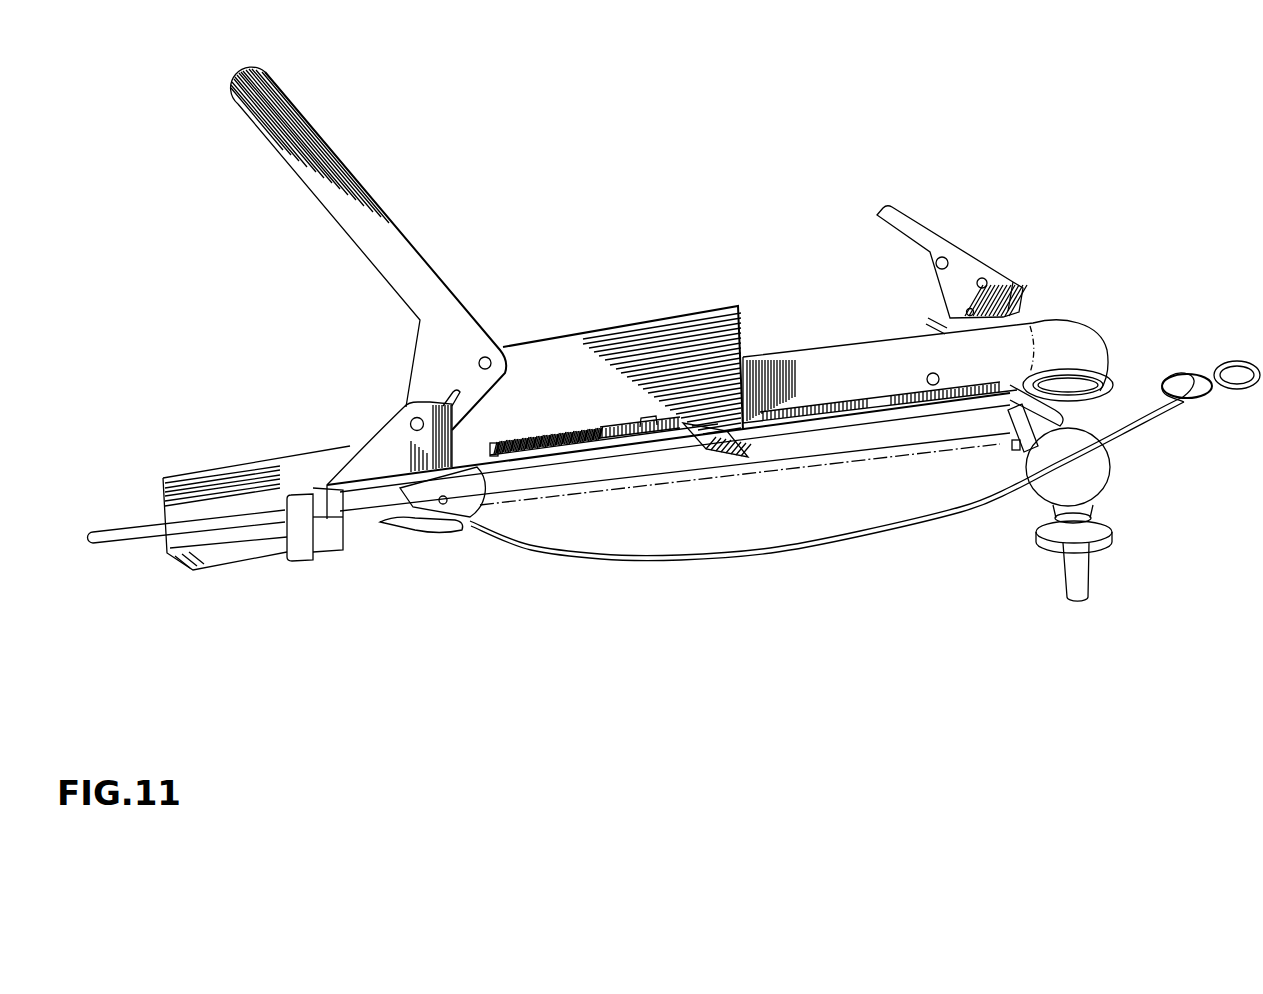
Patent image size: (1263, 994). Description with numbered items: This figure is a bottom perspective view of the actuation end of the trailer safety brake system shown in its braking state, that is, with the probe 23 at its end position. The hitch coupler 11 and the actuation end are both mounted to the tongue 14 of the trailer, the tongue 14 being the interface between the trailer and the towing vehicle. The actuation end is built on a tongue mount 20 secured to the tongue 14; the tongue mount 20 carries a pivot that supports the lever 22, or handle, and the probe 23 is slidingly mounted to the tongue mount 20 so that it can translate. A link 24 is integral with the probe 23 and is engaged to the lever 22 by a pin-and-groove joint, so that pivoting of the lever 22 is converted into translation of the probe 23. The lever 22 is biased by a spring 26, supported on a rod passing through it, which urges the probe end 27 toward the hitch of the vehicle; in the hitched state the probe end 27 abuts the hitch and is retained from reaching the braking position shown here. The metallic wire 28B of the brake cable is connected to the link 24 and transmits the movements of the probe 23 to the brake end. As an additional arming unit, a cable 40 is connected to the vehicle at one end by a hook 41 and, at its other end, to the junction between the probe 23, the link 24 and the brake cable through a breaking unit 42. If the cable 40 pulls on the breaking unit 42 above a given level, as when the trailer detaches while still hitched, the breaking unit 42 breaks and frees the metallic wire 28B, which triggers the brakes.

The hitch coupler 11 is at (853, 370).
The tongue 14 is at (217, 478).
The tongue mount 20 is at (598, 370).
The lever 22 is at (397, 253).
The probe 23 is at (473, 467).
The link 24 is at (388, 435).
The spring 26 is at (563, 433).
The probe end 27 is at (1040, 403).
The metallic wire 28B is at (133, 530).
The cable 40 is at (590, 552).
The hook 41 is at (1200, 373).
The breaking unit 42 is at (313, 537).